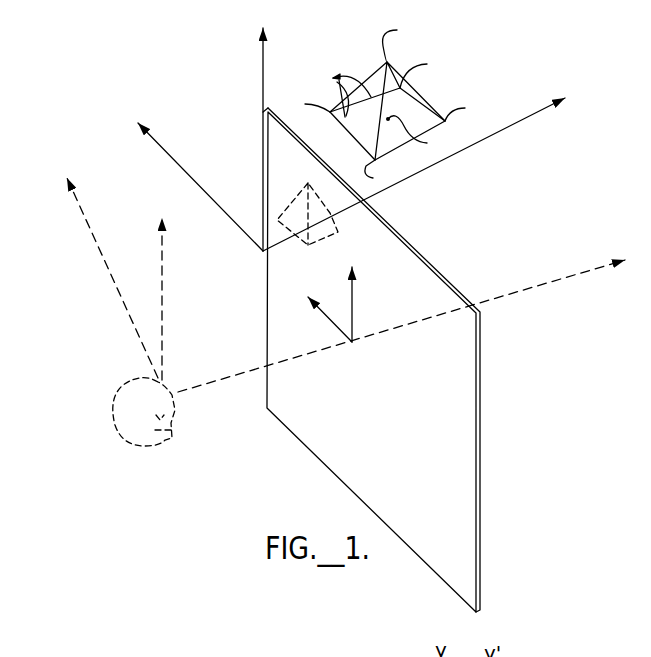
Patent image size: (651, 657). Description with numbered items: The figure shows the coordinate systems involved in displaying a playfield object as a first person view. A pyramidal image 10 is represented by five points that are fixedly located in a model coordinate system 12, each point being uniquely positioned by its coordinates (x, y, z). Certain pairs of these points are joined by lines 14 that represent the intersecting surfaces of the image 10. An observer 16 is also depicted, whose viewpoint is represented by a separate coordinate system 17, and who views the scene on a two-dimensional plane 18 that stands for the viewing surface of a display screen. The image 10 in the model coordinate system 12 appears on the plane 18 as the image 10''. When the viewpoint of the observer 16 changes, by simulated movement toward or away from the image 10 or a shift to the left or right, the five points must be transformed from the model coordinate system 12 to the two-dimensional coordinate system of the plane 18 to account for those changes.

The pyramidal image 10 is at (395, 107).
The model coordinate system 12 is at (165, 160).
The lines 14 is at (338, 90).
The observer 16 is at (113, 403).
The coordinate system 17 is at (110, 283).
The two-dimensional plane 18 is at (478, 455).
The image 10'' is at (331, 262).